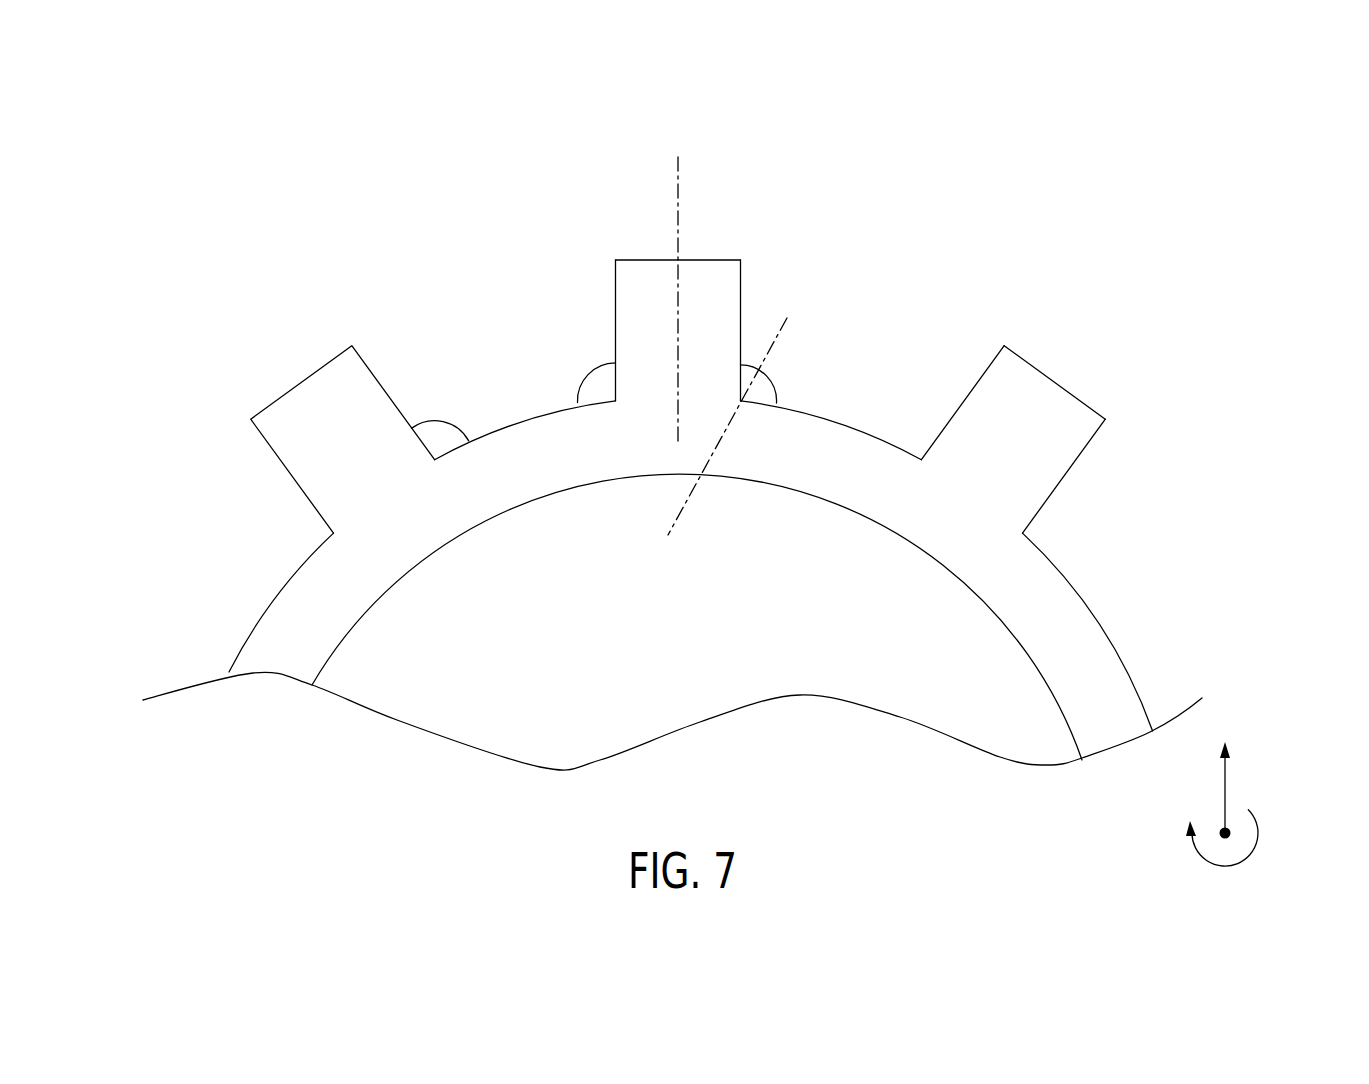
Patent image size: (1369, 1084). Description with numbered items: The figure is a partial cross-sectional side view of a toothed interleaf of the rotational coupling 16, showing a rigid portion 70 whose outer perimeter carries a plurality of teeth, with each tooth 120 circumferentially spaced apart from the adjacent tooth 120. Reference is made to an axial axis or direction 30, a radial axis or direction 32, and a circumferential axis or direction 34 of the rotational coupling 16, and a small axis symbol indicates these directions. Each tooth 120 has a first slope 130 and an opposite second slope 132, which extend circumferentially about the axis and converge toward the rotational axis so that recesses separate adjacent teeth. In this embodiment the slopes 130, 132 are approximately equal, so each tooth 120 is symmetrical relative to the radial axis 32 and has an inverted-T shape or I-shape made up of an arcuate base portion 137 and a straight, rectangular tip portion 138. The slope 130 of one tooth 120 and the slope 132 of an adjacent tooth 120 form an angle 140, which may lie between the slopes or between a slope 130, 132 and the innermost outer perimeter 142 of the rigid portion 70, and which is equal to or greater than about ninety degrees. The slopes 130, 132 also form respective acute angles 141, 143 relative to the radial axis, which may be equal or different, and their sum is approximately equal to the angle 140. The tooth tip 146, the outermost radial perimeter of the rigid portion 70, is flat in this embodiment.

The rotational coupling 16 is at (395, 182).
The rigid portion 70 is at (232, 257).
The tooth 120 is at (720, 300).
The first slope 130 is at (395, 405).
The second slope 132 is at (612, 330).
The arcuate base portion 137 is at (877, 457).
The straight tip portion 138 is at (1067, 475).
The angle 140 is at (450, 420).
The acute angle 141 is at (752, 362).
The innermost outer perimeter 142 is at (837, 423).
The acute angle 143 is at (773, 387).
The tooth tip 146 is at (1055, 347).
The axial axis or direction 30 is at (1220, 828).
The radial axis or direction 32 is at (678, 205).
The circumferential axis or direction 34 is at (1237, 865).